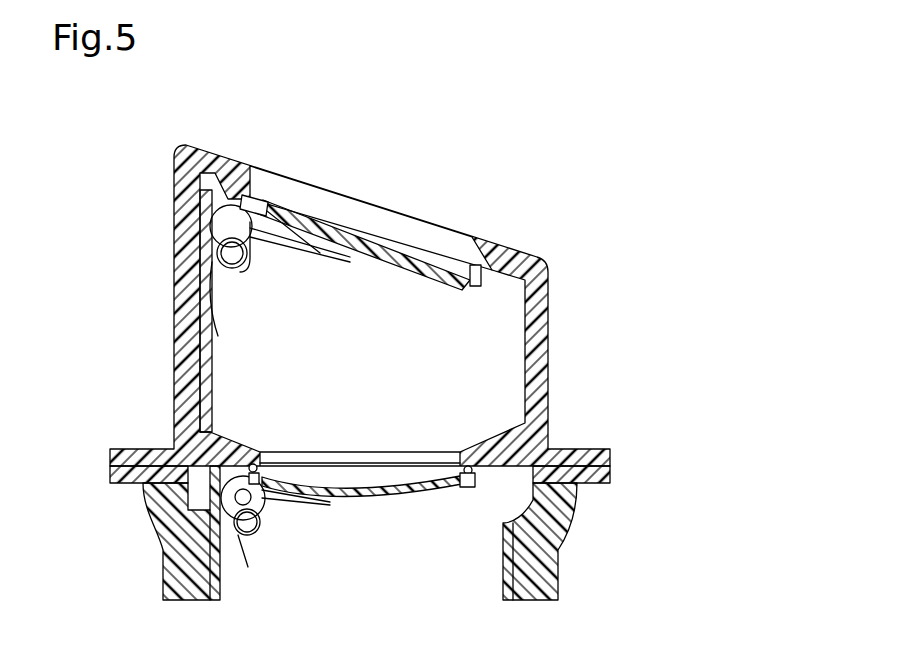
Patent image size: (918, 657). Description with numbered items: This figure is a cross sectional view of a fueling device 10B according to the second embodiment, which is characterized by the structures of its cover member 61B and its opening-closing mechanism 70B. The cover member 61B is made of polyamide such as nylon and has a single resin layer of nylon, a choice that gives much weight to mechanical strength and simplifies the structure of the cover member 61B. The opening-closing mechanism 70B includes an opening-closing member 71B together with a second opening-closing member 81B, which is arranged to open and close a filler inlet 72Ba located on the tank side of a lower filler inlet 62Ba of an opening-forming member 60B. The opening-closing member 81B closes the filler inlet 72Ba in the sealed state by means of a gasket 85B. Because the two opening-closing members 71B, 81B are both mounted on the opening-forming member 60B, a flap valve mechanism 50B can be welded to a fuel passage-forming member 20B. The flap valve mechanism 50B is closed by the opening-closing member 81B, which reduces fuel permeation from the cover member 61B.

The fueling device 10B is at (550, 210).
The fuel passage-forming member 20B is at (558, 593).
The flap valve mechanism 50B is at (548, 337).
The opening-forming member 60B is at (494, 300).
The cover member 61B is at (548, 290).
The lower filler inlet 62Ba is at (470, 240).
The opening-closing mechanism 70B is at (307, 220).
The opening-closing member 71B is at (373, 250).
The filler inlet 72Ba is at (312, 456).
The opening-closing member 81B is at (393, 497).
The gasket 85B is at (278, 456).